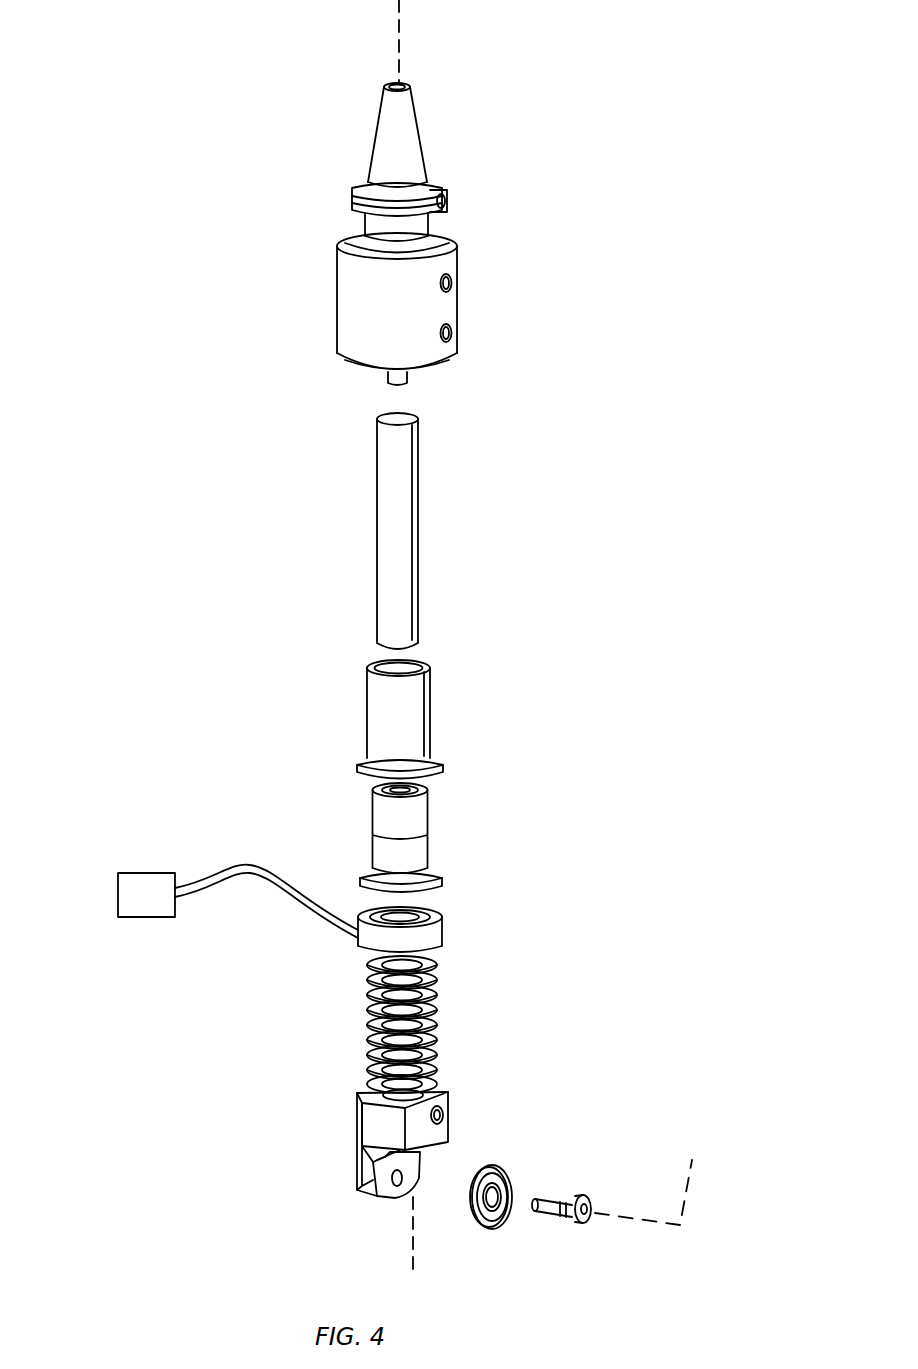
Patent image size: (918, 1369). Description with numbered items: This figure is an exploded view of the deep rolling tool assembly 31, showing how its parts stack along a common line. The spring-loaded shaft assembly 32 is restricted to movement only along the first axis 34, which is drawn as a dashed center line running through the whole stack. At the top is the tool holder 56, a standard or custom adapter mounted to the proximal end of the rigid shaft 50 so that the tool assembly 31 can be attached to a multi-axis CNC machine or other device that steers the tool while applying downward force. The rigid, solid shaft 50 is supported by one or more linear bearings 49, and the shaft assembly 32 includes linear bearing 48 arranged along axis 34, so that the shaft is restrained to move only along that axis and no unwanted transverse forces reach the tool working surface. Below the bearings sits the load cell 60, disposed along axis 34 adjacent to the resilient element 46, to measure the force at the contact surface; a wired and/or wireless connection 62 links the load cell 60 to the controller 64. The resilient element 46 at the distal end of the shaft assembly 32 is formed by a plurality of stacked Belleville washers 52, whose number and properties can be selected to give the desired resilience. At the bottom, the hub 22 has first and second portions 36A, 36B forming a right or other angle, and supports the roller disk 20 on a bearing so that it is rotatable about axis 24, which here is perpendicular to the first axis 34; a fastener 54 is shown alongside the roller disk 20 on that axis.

The roller disk 20 is at (512, 1183).
The hub 22 is at (339, 1163).
The axis 24 is at (650, 1177).
The tool assembly 31 is at (573, 215).
The spring-loaded shaft assembly 32 is at (557, 251).
The first axis 34 is at (399, 5).
The first portion 36A is at (380, 1122).
The second portion 36B is at (370, 1168).
The resilient element 46 is at (393, 1023).
The linear bearing 48 is at (363, 1016).
The linear bearings 49 is at (460, 705).
The rigid shaft 50 is at (377, 540).
The stacked Belleville washers 52 is at (445, 990).
The screw 54 is at (565, 1200).
The tool holder 56 is at (392, 139).
The load cell 60 is at (442, 935).
The wired and/or wireless connection 62 is at (252, 865).
The controller 64 is at (118, 895).